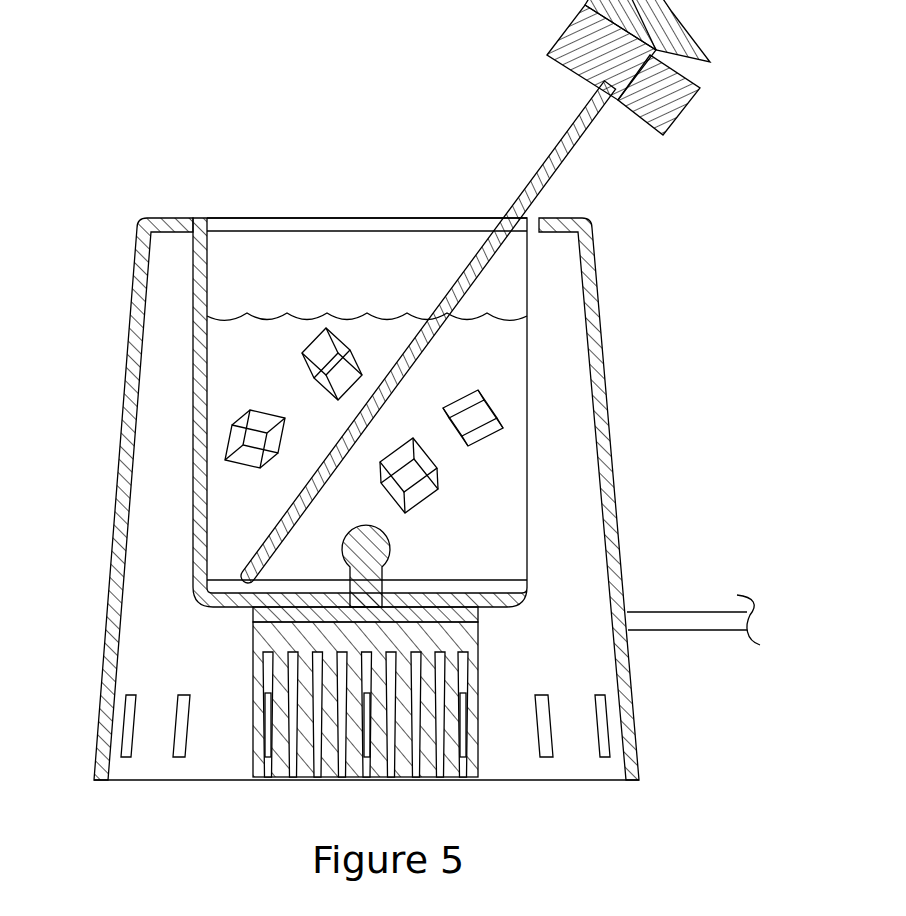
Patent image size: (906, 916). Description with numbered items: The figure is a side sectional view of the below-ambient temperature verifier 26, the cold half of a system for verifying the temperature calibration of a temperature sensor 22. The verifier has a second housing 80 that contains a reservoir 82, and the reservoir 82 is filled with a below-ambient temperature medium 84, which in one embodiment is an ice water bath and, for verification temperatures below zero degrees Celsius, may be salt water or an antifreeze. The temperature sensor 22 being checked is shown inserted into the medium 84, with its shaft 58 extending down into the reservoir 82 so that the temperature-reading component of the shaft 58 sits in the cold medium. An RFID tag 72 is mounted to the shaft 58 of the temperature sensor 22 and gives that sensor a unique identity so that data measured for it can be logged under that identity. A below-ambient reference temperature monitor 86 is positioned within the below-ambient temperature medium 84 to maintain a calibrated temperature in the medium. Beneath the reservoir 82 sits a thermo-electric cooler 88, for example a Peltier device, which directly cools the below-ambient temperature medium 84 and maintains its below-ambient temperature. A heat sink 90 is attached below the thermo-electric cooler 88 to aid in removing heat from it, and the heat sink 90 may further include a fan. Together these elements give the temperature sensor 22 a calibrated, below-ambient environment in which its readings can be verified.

The below-ambient temperature verifier 26 is at (140, 170).
The second housing 80 is at (610, 433).
The reservoir 82 is at (510, 200).
The below-ambient temperature medium 84 is at (283, 383).
The shaft 58 is at (572, 163).
The temperature sensor 22 is at (690, 42).
The RFID tag 72 is at (683, 115).
The below-ambient reference temperature monitor 86 is at (387, 543).
The thermo-electric cooler 88 is at (253, 614).
The heat sink 90 is at (478, 706).